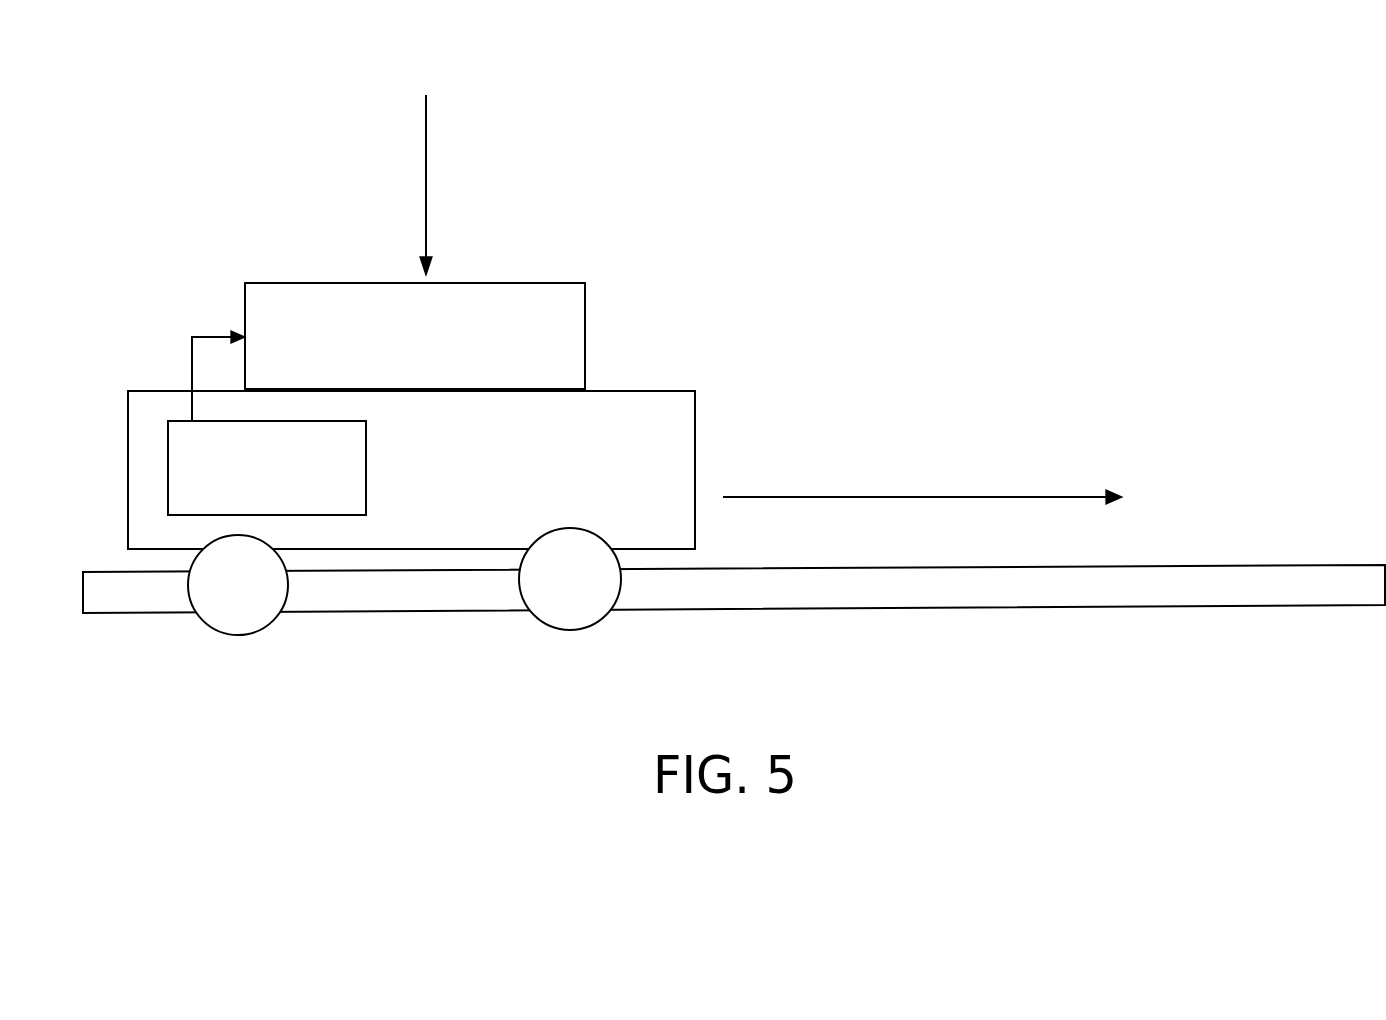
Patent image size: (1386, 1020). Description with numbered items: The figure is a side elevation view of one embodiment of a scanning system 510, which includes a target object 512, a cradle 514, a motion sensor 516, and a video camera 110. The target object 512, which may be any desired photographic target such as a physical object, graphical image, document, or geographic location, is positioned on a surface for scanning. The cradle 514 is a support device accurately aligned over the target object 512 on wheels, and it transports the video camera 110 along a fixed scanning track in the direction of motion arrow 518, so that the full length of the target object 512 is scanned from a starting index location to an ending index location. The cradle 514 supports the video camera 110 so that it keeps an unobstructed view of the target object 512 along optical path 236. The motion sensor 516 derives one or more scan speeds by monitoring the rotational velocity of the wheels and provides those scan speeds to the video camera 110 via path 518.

The video camera 110 is at (585, 323).
The optical path 236 is at (427, 175).
The scanning system 510 is at (734, 413).
The target object 512 is at (1072, 601).
The cradle 514 is at (695, 459).
The motion sensor 516 is at (366, 467).
The direction of motion arrow 518 is at (192, 360).